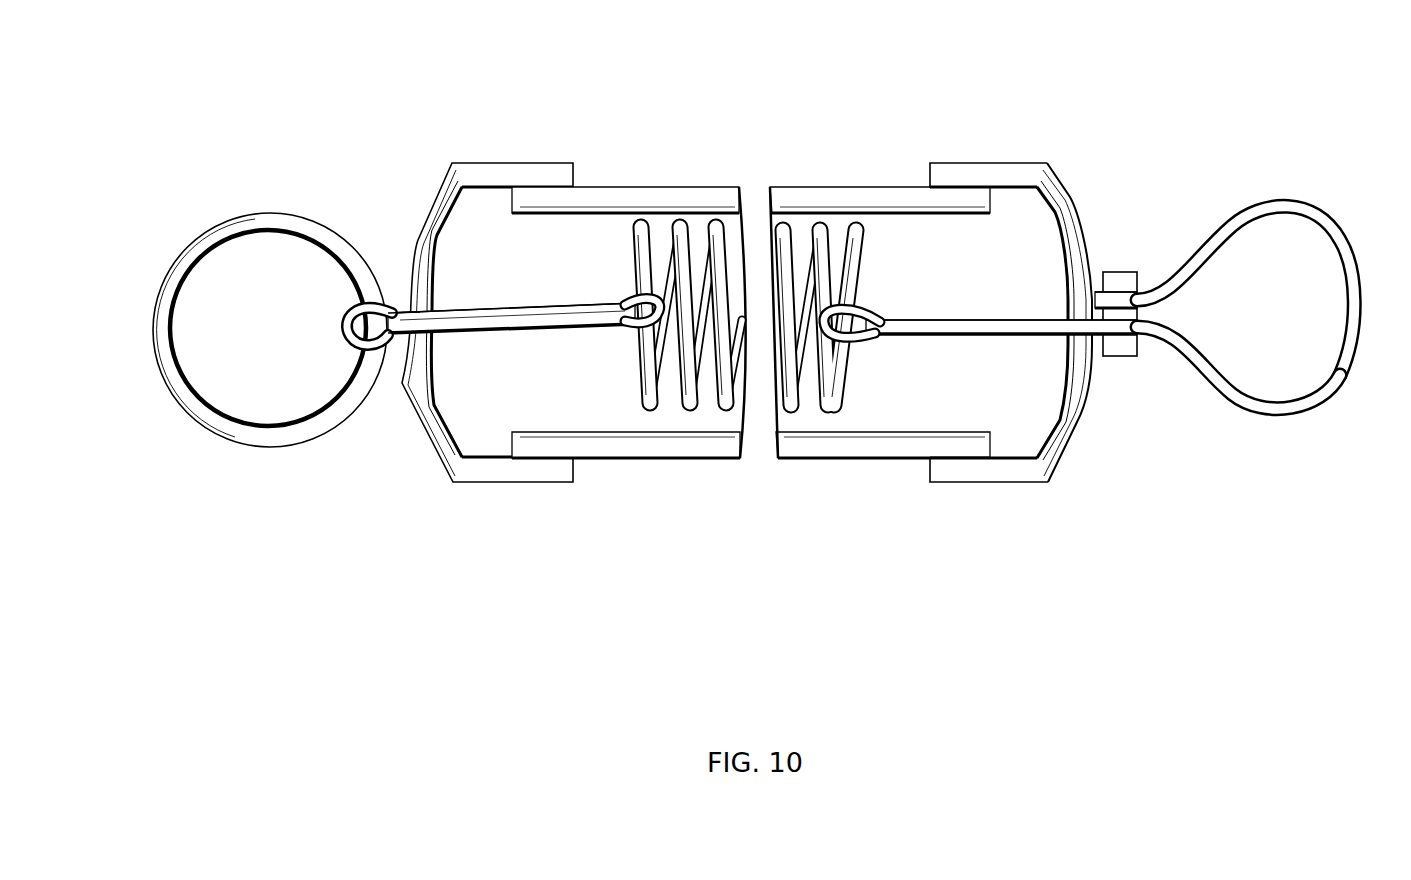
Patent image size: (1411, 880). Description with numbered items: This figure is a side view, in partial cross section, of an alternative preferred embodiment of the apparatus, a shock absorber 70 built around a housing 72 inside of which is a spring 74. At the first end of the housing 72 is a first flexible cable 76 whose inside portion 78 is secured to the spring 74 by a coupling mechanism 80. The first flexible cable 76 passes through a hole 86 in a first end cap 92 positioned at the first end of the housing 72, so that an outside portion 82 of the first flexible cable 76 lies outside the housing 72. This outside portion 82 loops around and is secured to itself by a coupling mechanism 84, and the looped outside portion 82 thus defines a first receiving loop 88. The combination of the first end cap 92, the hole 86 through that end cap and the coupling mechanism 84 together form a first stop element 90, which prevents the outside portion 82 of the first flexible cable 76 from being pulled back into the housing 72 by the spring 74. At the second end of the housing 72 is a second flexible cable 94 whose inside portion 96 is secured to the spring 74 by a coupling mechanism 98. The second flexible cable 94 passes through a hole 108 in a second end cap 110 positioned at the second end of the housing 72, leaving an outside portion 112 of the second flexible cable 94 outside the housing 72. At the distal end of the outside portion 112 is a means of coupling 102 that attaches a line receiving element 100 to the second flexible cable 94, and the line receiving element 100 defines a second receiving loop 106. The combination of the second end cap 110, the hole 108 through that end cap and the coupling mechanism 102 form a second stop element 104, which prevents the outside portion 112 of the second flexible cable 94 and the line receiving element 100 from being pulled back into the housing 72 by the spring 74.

The shock absorber 70 is at (756, 280).
The housing 72 is at (882, 193).
The spring 74 is at (683, 402).
The first flexible cable 76 is at (980, 314).
The inside portion 78 is at (967, 328).
The coupling mechanism 80 is at (840, 316).
The outside portion 82 is at (1302, 403).
The coupling mechanism 84 is at (1117, 282).
The hole 86 is at (1060, 313).
The first receiving loop 88 is at (1280, 258).
The first stop element 90 is at (1099, 359).
The first end cap 92 is at (1051, 281).
The second flexible cable 94 is at (491, 308).
The inside portion 96 is at (515, 327).
The coupling mechanism 98 is at (643, 297).
The line receiving element 100 is at (270, 324).
The means of coupling 102 is at (380, 343).
The second stop element 104 is at (394, 288).
The second receiving loop 106 is at (265, 287).
The hole 108 is at (443, 337).
The second end cap 110 is at (460, 309).
The outside portion 112 is at (430, 467).